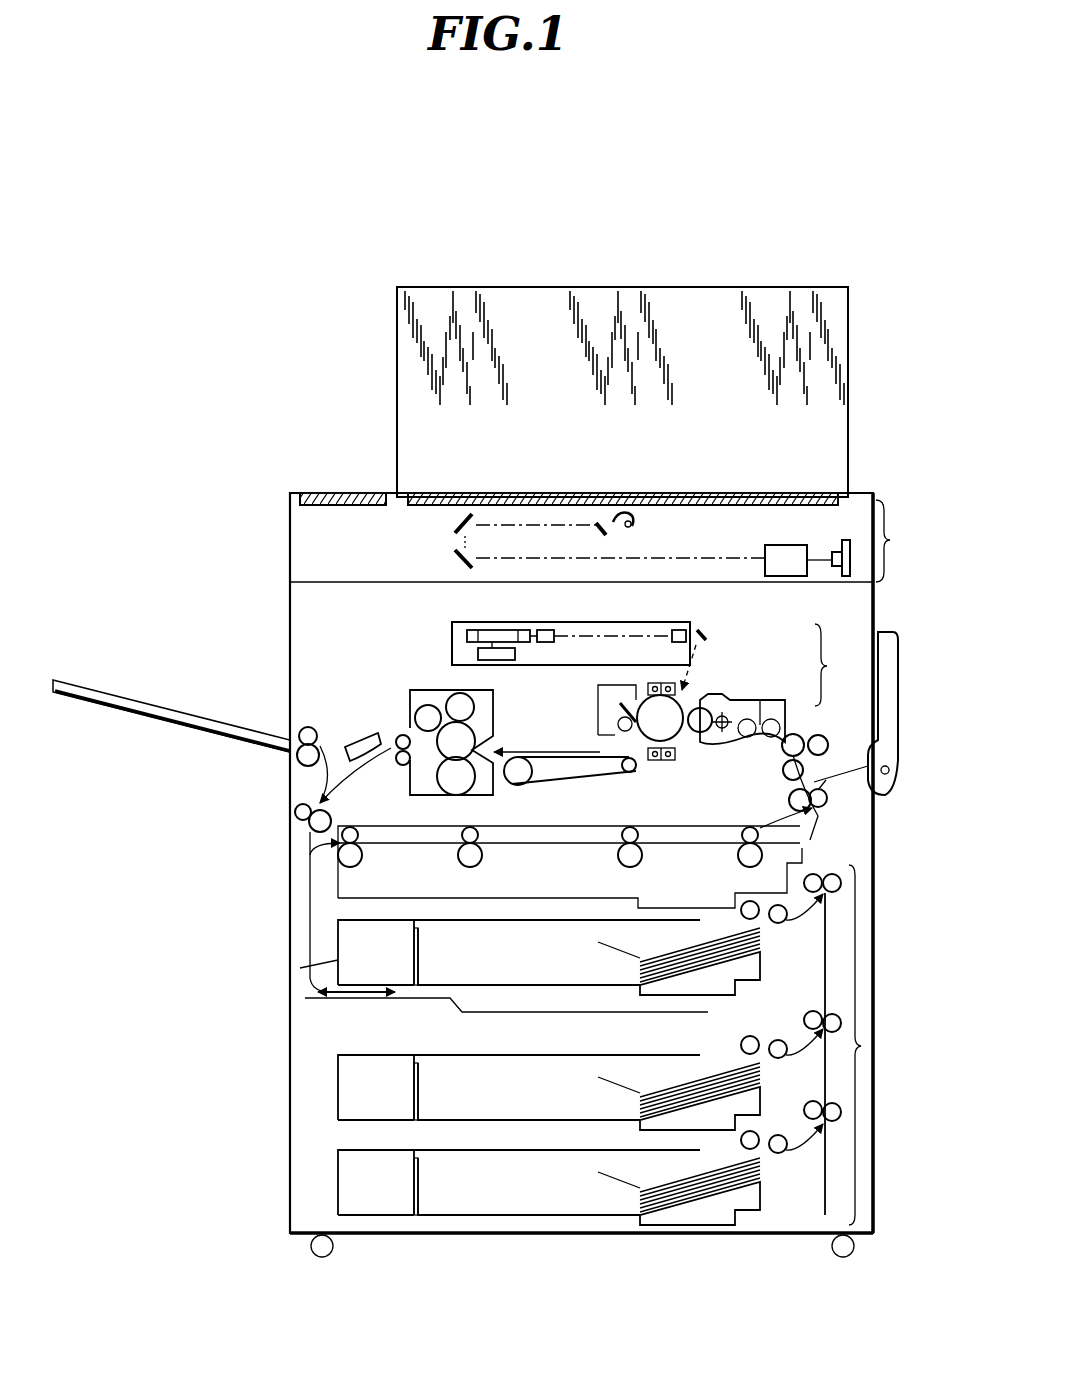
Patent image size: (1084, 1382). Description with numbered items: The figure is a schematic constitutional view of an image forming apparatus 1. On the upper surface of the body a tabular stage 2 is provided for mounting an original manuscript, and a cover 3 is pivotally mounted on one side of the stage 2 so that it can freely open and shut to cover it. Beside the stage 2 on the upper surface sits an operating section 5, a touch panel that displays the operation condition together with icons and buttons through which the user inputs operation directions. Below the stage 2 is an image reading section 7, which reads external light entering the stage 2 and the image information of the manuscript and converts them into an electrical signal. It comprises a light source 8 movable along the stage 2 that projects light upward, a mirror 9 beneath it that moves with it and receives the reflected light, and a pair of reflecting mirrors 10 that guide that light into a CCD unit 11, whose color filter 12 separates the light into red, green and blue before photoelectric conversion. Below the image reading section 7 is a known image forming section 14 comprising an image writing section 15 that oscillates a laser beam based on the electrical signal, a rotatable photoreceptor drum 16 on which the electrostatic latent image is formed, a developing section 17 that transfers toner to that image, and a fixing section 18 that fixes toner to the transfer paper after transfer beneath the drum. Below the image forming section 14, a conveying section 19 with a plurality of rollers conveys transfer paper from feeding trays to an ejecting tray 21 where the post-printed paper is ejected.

The image forming apparatus 1 is at (808, 216).
The stage 2 is at (500, 492).
The cover 3 is at (522, 300).
The operating section 5 is at (336, 492).
The image reading section 7 is at (889, 647).
The light source 8 is at (626, 512).
The mirror 9 is at (597, 522).
The pair of reflecting mirrors 10 is at (462, 556).
The CCD unit 11 is at (830, 545).
The color filter 12 is at (772, 545).
The image forming section 14 is at (839, 665).
The image writing section 15 is at (650, 622).
The photoreceptor drum 16 is at (690, 700).
The developing section 17 is at (770, 700).
The fixing section 18 is at (432, 690).
The conveying section 19 is at (868, 1048).
The ejecting tray 21 is at (281, 725).